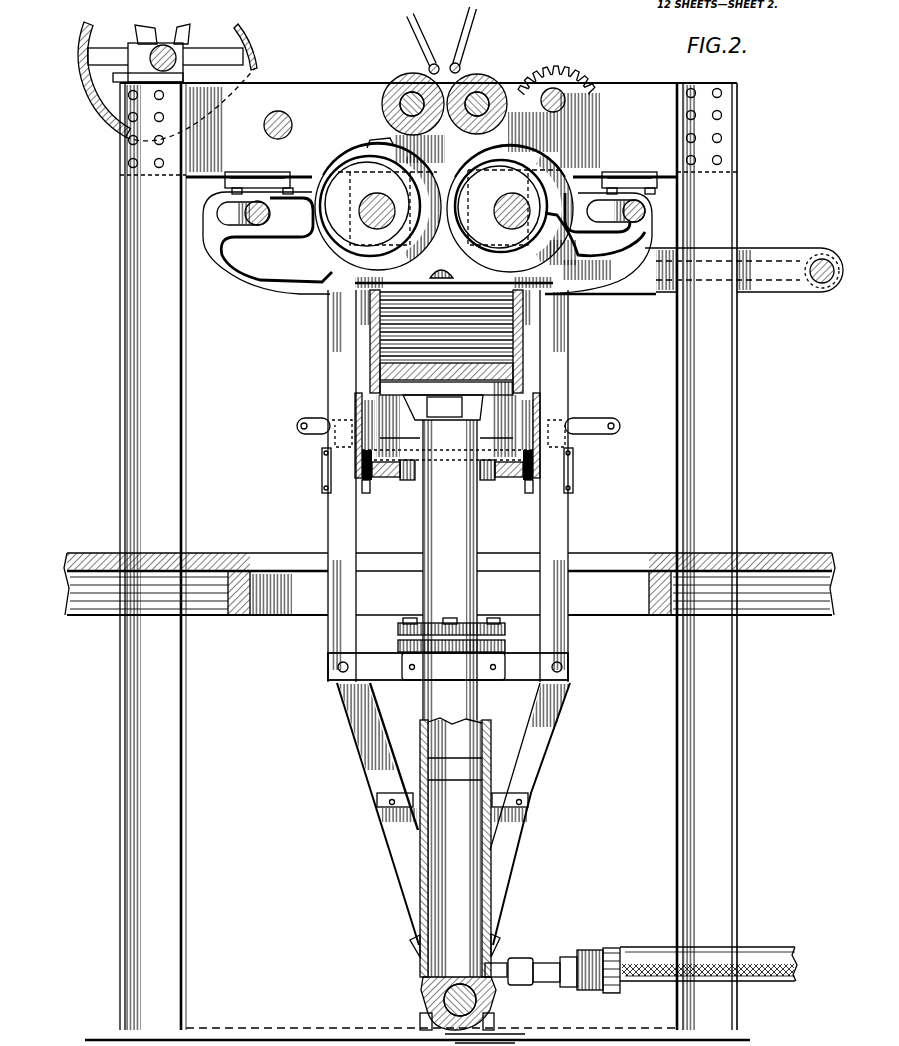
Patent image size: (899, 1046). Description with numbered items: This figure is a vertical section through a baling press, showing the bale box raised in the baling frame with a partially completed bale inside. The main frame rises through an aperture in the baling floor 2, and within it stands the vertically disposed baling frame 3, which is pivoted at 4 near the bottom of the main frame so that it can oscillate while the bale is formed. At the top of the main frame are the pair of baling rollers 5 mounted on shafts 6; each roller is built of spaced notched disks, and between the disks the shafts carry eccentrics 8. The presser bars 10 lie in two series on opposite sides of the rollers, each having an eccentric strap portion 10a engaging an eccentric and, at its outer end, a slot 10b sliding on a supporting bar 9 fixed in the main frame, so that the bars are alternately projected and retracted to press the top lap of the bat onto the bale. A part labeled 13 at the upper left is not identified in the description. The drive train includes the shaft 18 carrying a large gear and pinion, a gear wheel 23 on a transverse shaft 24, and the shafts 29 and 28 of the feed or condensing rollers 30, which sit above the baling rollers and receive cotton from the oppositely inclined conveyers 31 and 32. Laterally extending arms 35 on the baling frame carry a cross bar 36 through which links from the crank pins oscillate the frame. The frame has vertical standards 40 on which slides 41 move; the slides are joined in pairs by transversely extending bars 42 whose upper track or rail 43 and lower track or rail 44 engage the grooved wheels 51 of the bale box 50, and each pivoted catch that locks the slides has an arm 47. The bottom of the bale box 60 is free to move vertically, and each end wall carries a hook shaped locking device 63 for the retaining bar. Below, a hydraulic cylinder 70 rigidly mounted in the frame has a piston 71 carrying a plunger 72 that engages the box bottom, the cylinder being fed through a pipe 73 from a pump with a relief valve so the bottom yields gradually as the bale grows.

The baling floor 2 is at (248, 553).
The baling frame 3 is at (372, 765).
The pivot 4 is at (452, 1003).
The baling rollers 5 is at (392, 148).
The shafts 6 is at (376, 204).
The eccentrics 8 is at (360, 172).
The supporting bar 9 is at (255, 230).
The presser bars 10 is at (301, 292).
The eccentric strap portion 10a is at (562, 142).
The slot 10b is at (616, 160).
The top bracket 13 is at (182, 55).
The shaft 18 is at (278, 111).
The gear wheel 23 is at (567, 78).
The transverse shaft 24 is at (562, 98).
The shaft 28 is at (410, 93).
The shaft 29 is at (487, 92).
The feed or condensing rollers 30 is at (415, 96).
The conveyer 31 is at (430, 44).
The conveyer 32 is at (483, 40).
The laterally extending arms 35 is at (790, 260).
The cross bar 36 is at (823, 285).
The standards 40 is at (338, 528).
The slide 41 is at (324, 482).
The transversely extending bars 42 is at (362, 494).
The upper track or rail 43 is at (368, 476).
The lower track or rail 44 is at (369, 484).
The arm 47 is at (320, 420).
The bale box 50 is at (496, 442).
The grooved wheels 51 is at (370, 470).
The bottom of the bale box 60 is at (380, 370).
The hook shaped locking device 63 is at (448, 258).
The hydraulic cylinder 70 is at (470, 892).
The piston 71 is at (436, 588).
The plunger 72 is at (407, 388).
The pipe 73 is at (651, 963).